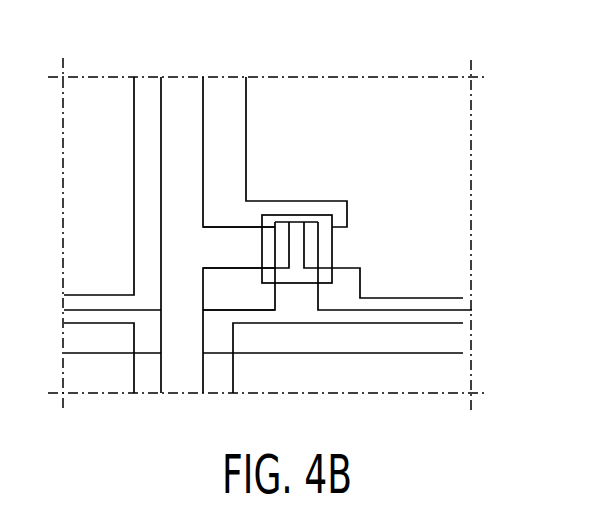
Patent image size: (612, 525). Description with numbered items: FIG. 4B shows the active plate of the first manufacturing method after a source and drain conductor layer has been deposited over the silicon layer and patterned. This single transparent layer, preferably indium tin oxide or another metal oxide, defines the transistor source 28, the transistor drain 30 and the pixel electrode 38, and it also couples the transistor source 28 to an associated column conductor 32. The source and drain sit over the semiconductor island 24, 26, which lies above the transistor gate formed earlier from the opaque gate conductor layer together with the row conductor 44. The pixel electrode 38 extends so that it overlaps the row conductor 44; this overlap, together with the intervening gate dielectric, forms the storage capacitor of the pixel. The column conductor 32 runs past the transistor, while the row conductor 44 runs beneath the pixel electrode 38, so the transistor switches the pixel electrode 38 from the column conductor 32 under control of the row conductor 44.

The semiconductor island 24 is at (335, 257).
The semiconductor island 26 is at (337, 266).
The transistor source 28 is at (238, 237).
The transistor drain 30 is at (340, 237).
The column conductor 32 is at (180, 87).
The pixel electrode 38 is at (423, 122).
The row conductor 44 is at (463, 353).